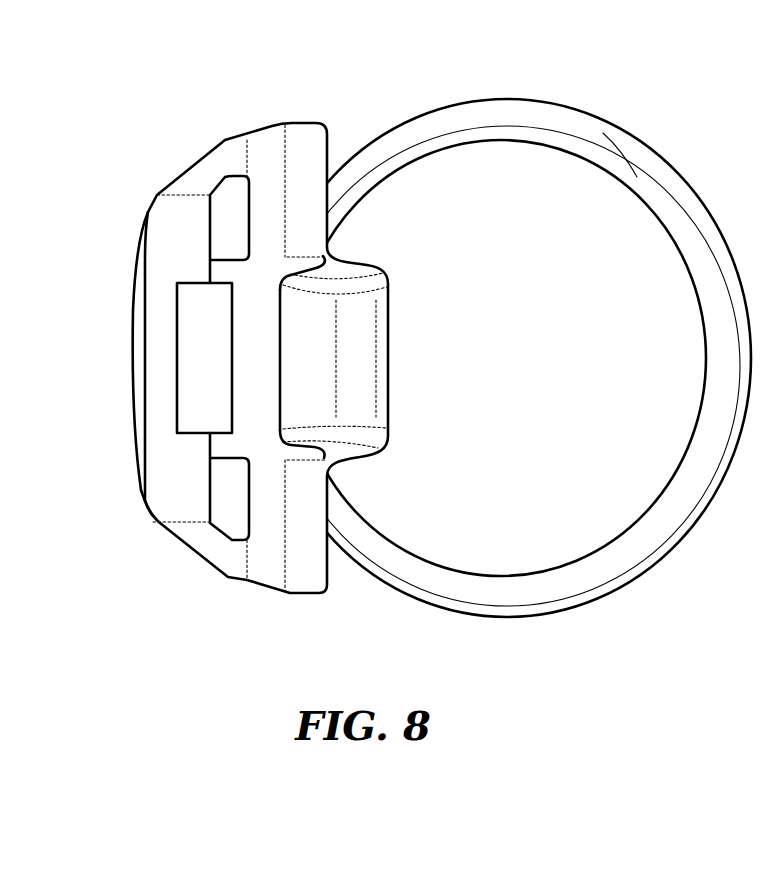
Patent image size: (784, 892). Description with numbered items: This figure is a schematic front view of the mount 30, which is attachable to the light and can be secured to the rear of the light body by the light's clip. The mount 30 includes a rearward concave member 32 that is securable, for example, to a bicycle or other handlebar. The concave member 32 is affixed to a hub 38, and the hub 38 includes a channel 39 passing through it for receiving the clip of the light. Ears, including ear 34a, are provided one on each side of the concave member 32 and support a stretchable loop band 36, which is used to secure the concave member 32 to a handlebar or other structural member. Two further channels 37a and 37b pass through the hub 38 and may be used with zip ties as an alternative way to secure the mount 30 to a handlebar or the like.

The mount 30 is at (340, 93).
The rearward concave member 32 is at (170, 462).
The ear 34a is at (347, 358).
The stretchable loop band 36 is at (529, 587).
The channel 37a is at (233, 502).
The channel 37b is at (232, 197).
The hub 38 is at (182, 213).
The channel 39 is at (191, 366).